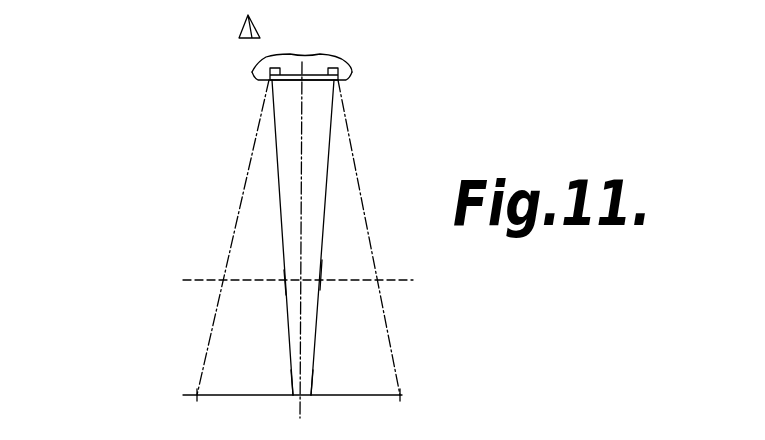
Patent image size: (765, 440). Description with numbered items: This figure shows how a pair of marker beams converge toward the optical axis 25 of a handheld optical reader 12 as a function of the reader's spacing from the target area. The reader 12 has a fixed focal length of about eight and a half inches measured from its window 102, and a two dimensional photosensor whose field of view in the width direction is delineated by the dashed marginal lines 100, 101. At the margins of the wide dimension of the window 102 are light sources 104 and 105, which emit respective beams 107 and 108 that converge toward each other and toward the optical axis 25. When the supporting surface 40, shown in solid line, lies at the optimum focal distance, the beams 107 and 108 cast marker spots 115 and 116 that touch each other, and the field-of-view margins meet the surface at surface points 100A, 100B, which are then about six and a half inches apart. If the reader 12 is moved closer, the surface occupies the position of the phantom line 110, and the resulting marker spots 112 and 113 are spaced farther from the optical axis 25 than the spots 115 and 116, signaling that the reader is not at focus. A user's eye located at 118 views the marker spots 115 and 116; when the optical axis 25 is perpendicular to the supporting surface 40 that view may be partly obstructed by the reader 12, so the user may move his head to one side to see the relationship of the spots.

The reader 12 is at (318, 58).
The optical axis 25 is at (295, 232).
The supporting surface 40 is at (372, 393).
The marginal line 100 is at (211, 333).
The surface point 100A is at (197, 398).
The surface point 100B is at (400, 397).
The marginal line 101 is at (394, 366).
The window 102 is at (322, 77).
The light source 104 is at (348, 64).
The light source 105 is at (252, 73).
The beam 107 is at (330, 141).
The beam 108 is at (277, 150).
The phantom line 110 is at (397, 280).
The marker spot 112 is at (320, 280).
The marker spot 113 is at (285, 282).
The marker spot 115 is at (312, 393).
The marker spot 116 is at (290, 392).
The user's eye 118 is at (243, 27).